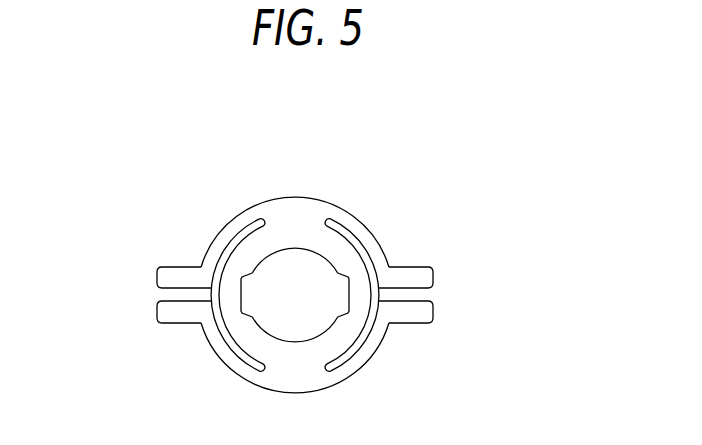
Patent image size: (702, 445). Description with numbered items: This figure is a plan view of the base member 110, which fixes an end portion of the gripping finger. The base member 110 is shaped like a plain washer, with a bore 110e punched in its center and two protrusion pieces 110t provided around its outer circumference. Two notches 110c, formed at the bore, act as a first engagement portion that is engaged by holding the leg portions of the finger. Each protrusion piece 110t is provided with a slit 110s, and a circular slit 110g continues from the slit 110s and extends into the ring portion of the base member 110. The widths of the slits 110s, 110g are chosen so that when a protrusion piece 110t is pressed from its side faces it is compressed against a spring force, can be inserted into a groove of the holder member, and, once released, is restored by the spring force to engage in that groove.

The base member 110 is at (350, 212).
The bore 110e is at (293, 268).
The protrusion piece 110t is at (157, 268).
The slit 110s is at (154, 294).
The circular slit 110g is at (222, 333).
The notch 110c is at (243, 312).